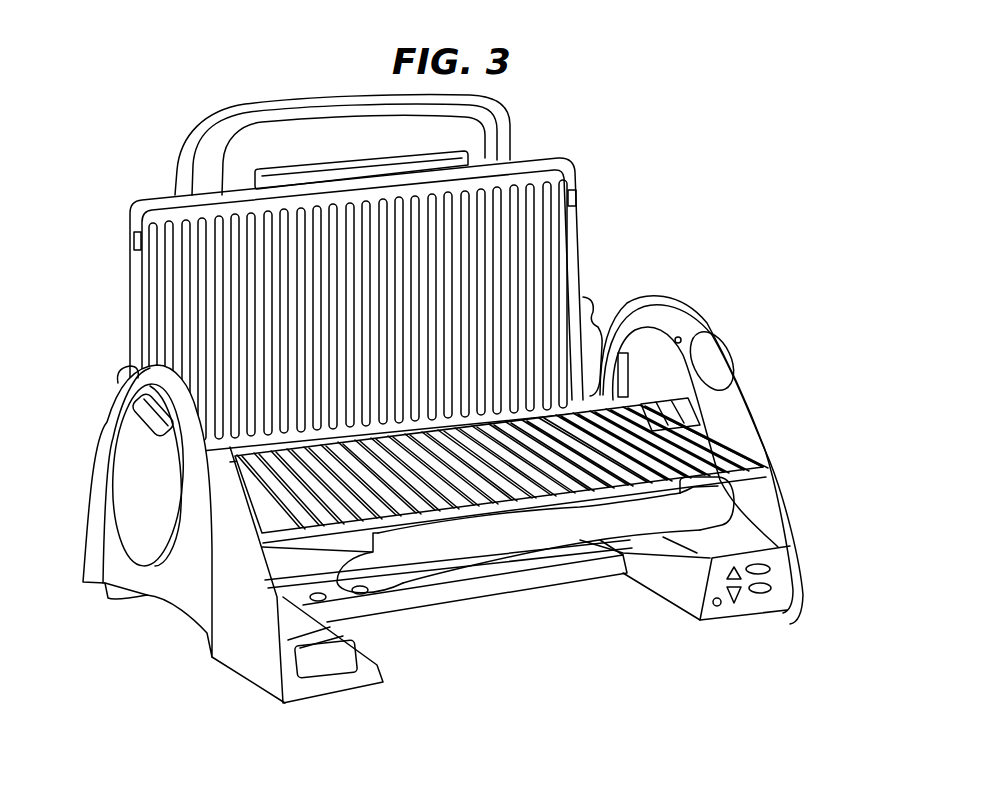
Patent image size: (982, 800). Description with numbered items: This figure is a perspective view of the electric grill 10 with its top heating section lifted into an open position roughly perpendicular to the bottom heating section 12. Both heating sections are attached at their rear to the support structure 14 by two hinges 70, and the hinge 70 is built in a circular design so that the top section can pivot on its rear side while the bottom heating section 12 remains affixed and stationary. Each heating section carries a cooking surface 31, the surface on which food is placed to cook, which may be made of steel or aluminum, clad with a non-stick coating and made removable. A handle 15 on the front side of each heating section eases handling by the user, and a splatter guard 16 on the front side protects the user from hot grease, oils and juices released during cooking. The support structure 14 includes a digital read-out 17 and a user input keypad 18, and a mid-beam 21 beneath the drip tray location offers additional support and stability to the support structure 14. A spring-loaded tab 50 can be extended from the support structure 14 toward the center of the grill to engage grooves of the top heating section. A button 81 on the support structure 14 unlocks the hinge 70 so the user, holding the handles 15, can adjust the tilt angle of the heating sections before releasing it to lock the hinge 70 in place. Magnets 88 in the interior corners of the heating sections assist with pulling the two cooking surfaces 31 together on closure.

The electric grill 10 is at (690, 140).
The bottom heating section 12 is at (755, 480).
The support structure 14 is at (760, 437).
The handle 15 is at (500, 120).
The splatter guard 16 is at (293, 160).
The digital read-out 17 is at (333, 670).
The user input keypad 18 is at (788, 596).
The mid-beam 21 is at (520, 580).
The cooking surface 31 is at (540, 245).
The tab 50 is at (150, 408).
The hinge 70 is at (128, 452).
The button 81 is at (718, 360).
The magnet 88 is at (128, 243).